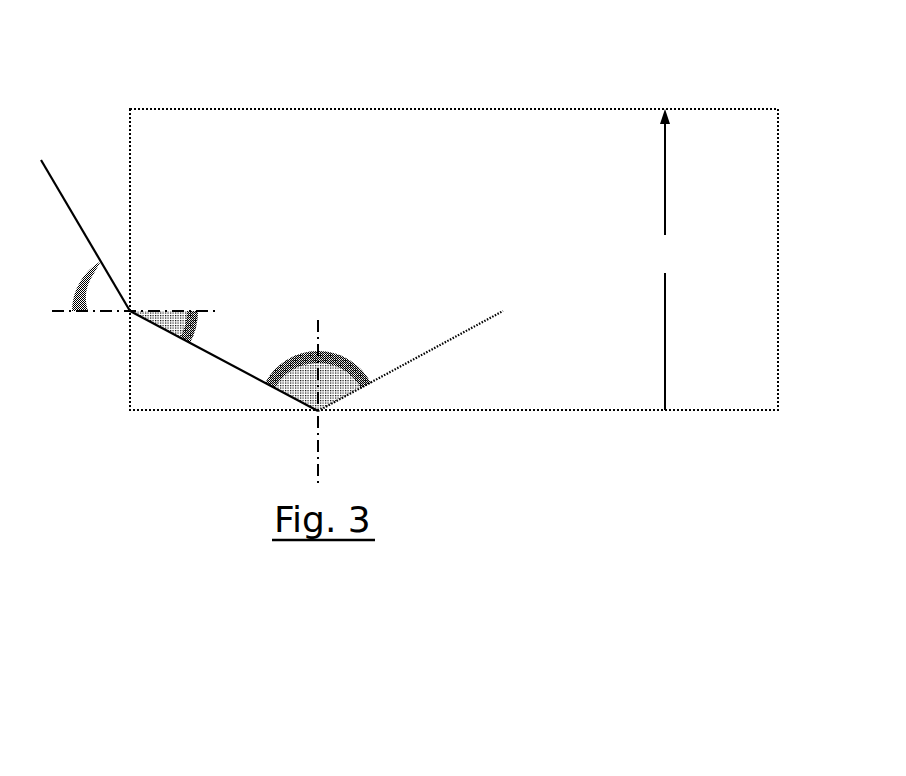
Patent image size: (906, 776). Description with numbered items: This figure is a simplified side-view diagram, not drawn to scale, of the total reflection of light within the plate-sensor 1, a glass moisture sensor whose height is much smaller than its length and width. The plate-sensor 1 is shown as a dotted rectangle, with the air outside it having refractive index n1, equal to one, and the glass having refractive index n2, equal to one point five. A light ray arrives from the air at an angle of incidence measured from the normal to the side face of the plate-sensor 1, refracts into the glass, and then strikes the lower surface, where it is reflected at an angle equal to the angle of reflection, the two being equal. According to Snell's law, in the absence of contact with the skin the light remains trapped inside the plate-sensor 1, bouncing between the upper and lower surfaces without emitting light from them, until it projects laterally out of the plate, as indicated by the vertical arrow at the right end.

The plate-sensor 1 is at (334, 180).
The refractive index of air n1 is at (85, 221).
The refractive index of glass n2 is at (224, 271).